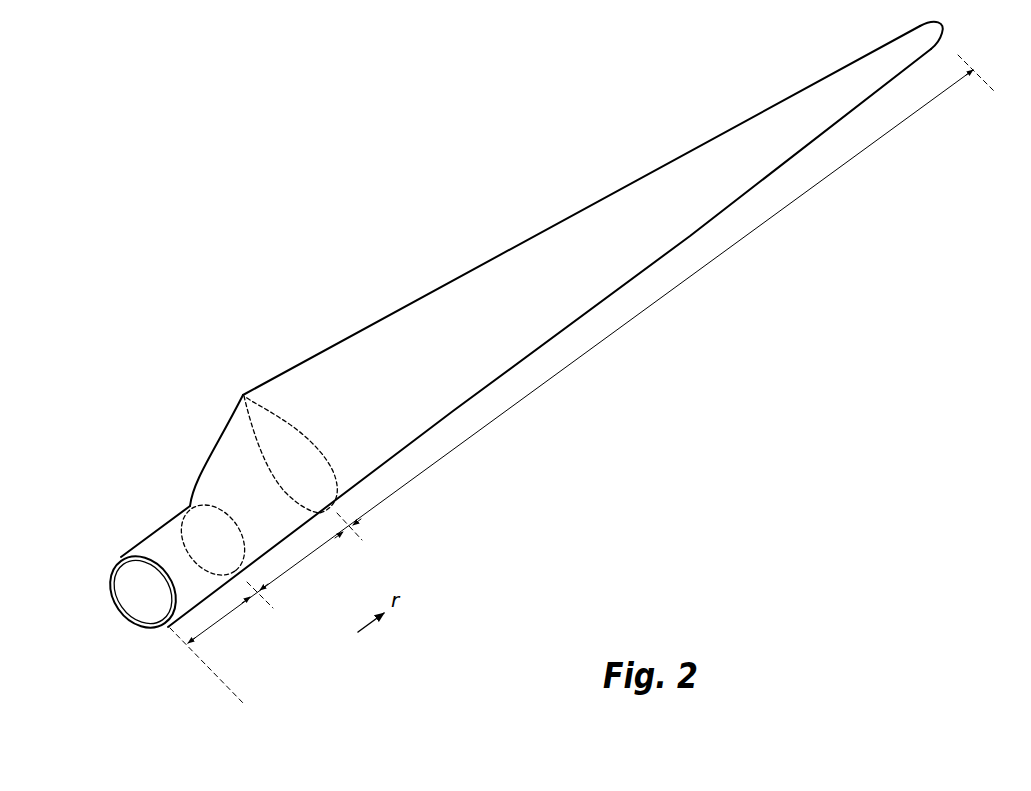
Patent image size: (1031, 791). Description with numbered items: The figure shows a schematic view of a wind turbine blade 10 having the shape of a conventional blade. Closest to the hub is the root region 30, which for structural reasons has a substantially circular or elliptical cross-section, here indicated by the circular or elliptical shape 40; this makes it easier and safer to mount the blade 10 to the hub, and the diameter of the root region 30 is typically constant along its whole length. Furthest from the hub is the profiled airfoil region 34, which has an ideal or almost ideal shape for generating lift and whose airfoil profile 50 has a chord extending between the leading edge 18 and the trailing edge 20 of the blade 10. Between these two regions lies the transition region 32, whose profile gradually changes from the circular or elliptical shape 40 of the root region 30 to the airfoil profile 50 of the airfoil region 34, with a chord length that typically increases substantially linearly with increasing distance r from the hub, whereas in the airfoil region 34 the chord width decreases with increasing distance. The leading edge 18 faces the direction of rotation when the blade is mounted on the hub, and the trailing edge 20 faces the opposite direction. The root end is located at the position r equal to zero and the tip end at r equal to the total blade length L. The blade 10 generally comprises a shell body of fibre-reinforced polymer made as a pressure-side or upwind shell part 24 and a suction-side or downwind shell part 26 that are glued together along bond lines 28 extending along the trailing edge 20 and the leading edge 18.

The wind turbine blade 10 is at (555, 324).
The leading edge 18 is at (690, 238).
The trailing edge 20 is at (580, 211).
The pressure-side or upwind shell part 24 is at (135, 552).
The suction-side or downwind shell part 26 is at (150, 623).
The bond lines 28 is at (123, 557).
The root region 30 is at (223, 620).
The transition region 32 is at (305, 558).
The airfoil region 34 is at (600, 345).
The circular or elliptical shape 40 is at (190, 503).
The airfoil profile 50 is at (243, 395).